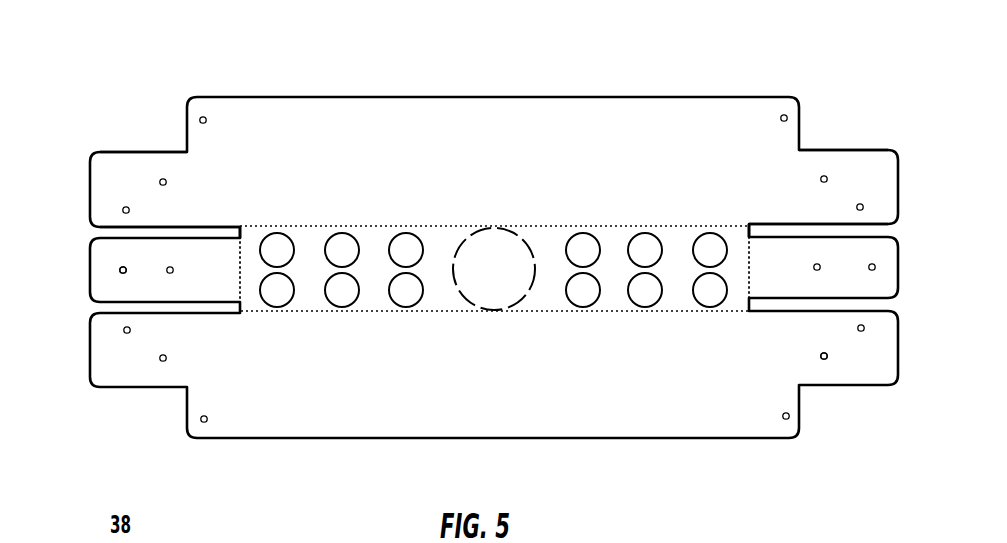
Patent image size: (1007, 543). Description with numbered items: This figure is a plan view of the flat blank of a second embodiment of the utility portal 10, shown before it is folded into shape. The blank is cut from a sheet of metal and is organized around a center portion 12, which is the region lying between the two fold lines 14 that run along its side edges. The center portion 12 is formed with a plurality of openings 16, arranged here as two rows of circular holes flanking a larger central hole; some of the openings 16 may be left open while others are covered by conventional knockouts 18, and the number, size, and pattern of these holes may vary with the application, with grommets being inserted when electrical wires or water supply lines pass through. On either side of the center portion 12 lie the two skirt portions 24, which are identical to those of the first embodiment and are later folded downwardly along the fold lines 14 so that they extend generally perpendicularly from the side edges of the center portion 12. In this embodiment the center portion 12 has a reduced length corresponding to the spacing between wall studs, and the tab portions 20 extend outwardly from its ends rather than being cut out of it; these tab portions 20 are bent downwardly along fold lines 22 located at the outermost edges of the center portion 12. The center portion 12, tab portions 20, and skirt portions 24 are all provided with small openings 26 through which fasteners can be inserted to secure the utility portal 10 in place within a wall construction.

The utility portal 10 is at (688, 50).
The center portion 12 is at (442, 297).
The fold lines 14 is at (687, 215).
The openings 16 is at (277, 236).
The knockouts 18 is at (483, 265).
The tab portions 20 is at (103, 255).
The fold lines 22 is at (241, 258).
The skirt portions 24 is at (557, 120).
The openings 26 is at (120, 273).